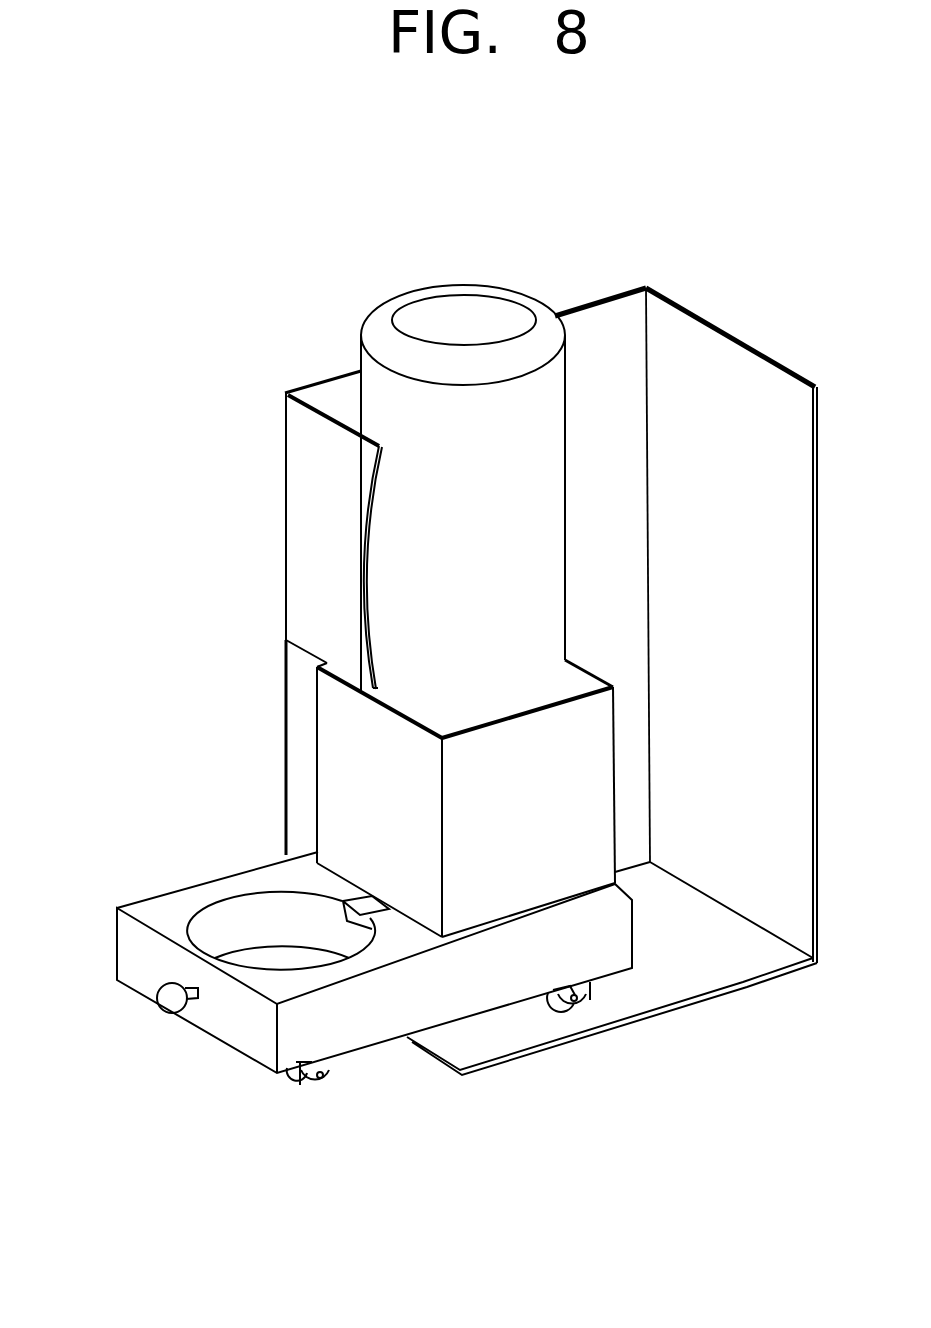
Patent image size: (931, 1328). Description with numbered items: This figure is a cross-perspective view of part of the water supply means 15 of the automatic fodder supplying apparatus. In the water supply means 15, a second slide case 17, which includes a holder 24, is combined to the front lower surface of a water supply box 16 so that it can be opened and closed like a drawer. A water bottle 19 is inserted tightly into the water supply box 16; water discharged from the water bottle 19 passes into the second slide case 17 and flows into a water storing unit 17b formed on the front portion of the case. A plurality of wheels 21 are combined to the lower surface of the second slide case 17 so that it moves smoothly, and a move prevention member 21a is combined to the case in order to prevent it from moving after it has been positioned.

The water supply means 15 is at (272, 469).
The water supply box 16 is at (305, 547).
The second slide case 17 is at (132, 953).
The water storing unit 17b is at (242, 918).
The water bottle 19 is at (440, 300).
The wheels 21 is at (297, 1083).
The move prevention member 21a is at (597, 993).
The holder 24 is at (170, 1003).